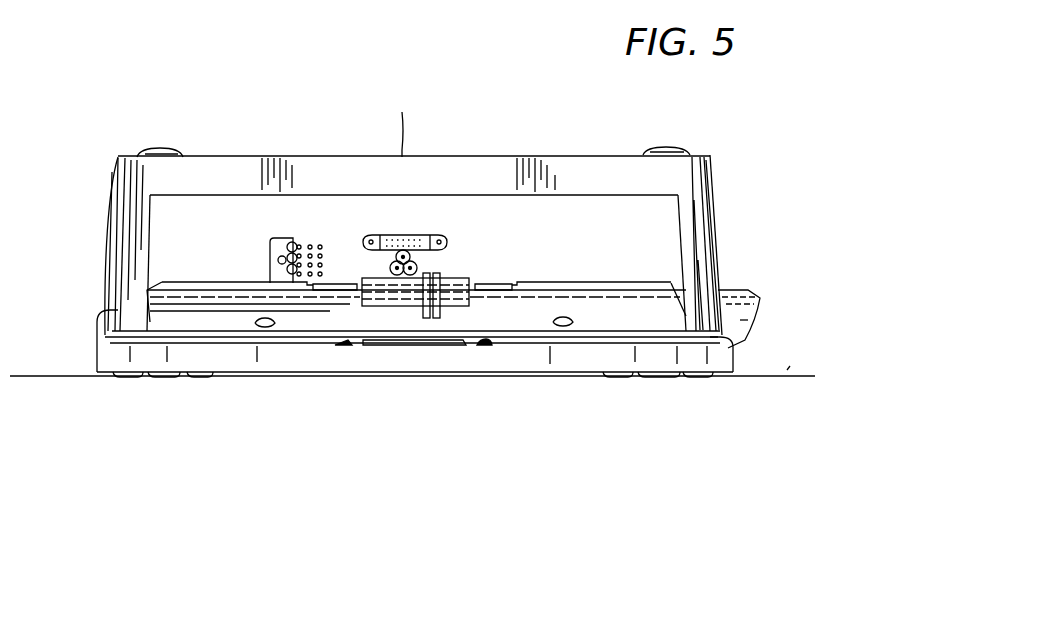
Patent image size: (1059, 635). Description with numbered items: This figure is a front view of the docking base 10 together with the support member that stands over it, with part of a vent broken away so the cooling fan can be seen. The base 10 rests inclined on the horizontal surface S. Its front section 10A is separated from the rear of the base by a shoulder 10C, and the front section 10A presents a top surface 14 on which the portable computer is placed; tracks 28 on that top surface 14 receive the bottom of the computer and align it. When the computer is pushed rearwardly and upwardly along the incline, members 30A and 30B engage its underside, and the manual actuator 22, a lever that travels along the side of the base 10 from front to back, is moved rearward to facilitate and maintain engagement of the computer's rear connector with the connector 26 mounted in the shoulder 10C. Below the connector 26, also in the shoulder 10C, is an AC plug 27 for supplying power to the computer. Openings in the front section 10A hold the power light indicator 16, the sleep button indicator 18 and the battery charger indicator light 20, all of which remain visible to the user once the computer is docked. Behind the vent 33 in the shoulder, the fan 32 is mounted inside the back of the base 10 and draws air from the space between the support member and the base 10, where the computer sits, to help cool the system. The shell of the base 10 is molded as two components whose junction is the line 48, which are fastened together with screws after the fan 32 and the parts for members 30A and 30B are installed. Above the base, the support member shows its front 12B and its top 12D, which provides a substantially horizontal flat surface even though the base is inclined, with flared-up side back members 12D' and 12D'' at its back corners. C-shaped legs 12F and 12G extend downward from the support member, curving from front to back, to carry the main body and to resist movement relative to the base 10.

The base 10 is at (172, 414).
The front section 10A is at (577, 360).
The shoulder 10C is at (165, 220).
The front 12B is at (462, 180).
The top 12D is at (407, 122).
The flared up side back member 12D' is at (145, 122).
The flared up side back member 12D'' is at (659, 121).
The leg 12F is at (123, 258).
The leg 12G is at (705, 245).
The top surface 14 is at (522, 315).
The power light indicator 16 is at (344, 348).
The sleep button indicator 18 is at (405, 347).
The battery charger indicator light 20 is at (488, 348).
The manual actuator 22 is at (738, 300).
The connector 26 is at (420, 235).
The AC plug 27 is at (416, 268).
The tracks 28 is at (440, 314).
The member 30A is at (350, 282).
The member 30B is at (510, 283).
The fan 32 is at (283, 240).
The vent 33 is at (313, 242).
The line 48 is at (658, 348).
The horizontal surface S is at (412, 350).